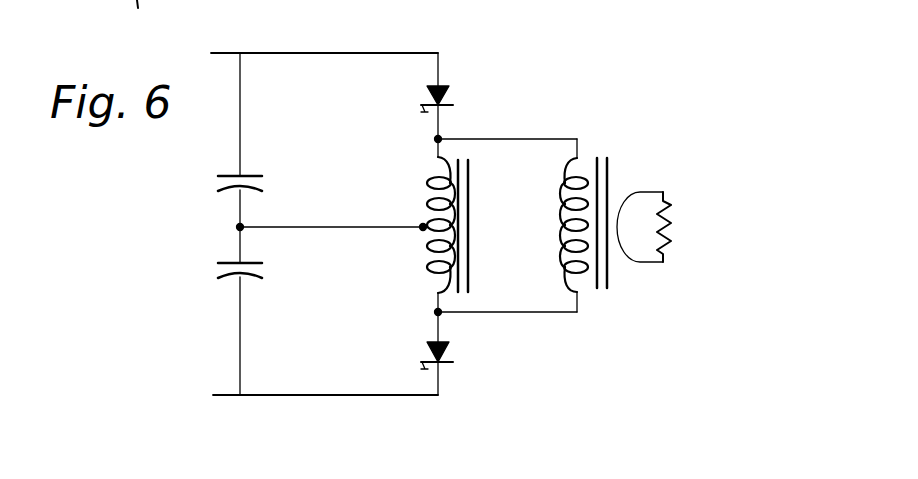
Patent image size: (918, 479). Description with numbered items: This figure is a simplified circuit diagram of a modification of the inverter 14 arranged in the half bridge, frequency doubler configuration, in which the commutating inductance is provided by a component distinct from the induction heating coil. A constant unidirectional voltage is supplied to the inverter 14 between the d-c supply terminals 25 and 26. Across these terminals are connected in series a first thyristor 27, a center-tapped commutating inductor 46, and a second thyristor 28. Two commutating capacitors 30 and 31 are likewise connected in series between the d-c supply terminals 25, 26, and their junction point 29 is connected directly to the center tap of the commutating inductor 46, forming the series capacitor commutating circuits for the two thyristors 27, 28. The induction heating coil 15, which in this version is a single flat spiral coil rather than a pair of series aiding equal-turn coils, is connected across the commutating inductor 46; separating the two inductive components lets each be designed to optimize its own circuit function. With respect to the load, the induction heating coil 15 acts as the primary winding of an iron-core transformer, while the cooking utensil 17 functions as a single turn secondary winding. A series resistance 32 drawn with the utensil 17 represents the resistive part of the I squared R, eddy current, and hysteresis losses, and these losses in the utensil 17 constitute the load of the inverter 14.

The inverter 14 is at (351, 207).
The induction heating coil 15 is at (563, 262).
The utensil 17 is at (629, 192).
The d-c supply terminal 25 is at (233, 52).
The d-c supply terminal 26 is at (228, 396).
The first thyristor 27 is at (448, 97).
The second thyristor 28 is at (450, 353).
The junction point 29 is at (238, 228).
The commutating capacitor 30 is at (248, 176).
The commutating capacitor 31 is at (245, 263).
The series resistance 32 is at (666, 250).
The center-tapped commutating inductor 46 is at (428, 267).